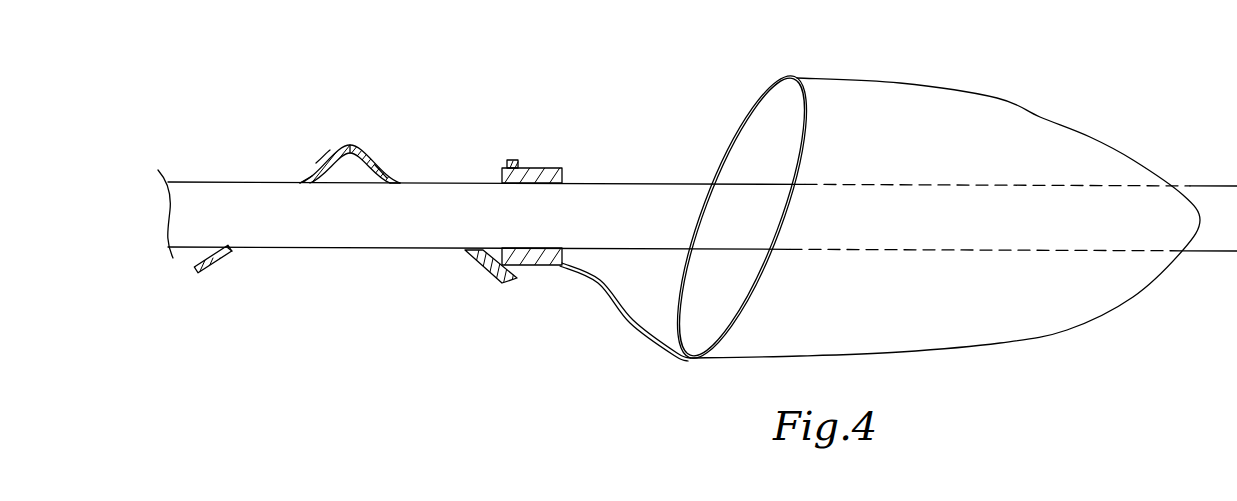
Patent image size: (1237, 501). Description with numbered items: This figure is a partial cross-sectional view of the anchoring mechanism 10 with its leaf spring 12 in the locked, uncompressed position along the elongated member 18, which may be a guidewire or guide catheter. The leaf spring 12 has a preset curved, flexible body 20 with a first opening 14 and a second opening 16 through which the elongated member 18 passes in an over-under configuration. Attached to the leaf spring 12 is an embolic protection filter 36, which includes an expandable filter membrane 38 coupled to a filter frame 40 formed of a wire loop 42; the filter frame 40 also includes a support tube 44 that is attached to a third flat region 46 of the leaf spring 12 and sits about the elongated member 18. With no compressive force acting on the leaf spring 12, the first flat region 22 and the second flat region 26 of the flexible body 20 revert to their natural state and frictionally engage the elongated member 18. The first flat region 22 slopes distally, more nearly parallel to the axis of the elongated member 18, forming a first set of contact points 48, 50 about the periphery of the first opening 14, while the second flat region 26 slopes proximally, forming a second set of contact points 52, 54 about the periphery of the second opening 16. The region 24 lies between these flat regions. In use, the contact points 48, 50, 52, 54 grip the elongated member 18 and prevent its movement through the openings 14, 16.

The anchoring mechanism 10 is at (303, 73).
The leaf spring 12 is at (355, 127).
The first opening 14 is at (253, 213).
The second opening 16 is at (437, 222).
The elongated member 18 is at (1218, 242).
The flexible body 20 is at (208, 265).
The first flat region 22 is at (320, 165).
The dome apex 24 is at (360, 144).
The second flat region 26 is at (380, 168).
The embolic protection filter 36 is at (890, 65).
The expandable filter membrane 38 is at (1040, 117).
The filter frame 40 is at (725, 133).
The wire loop 42 is at (768, 93).
The support tube 44 is at (563, 170).
The third flat region 46 is at (517, 162).
The first contact point 48 is at (308, 177).
The first contact point 50 is at (228, 250).
The second contact point 52 is at (395, 178).
The second contact point 54 is at (465, 251).